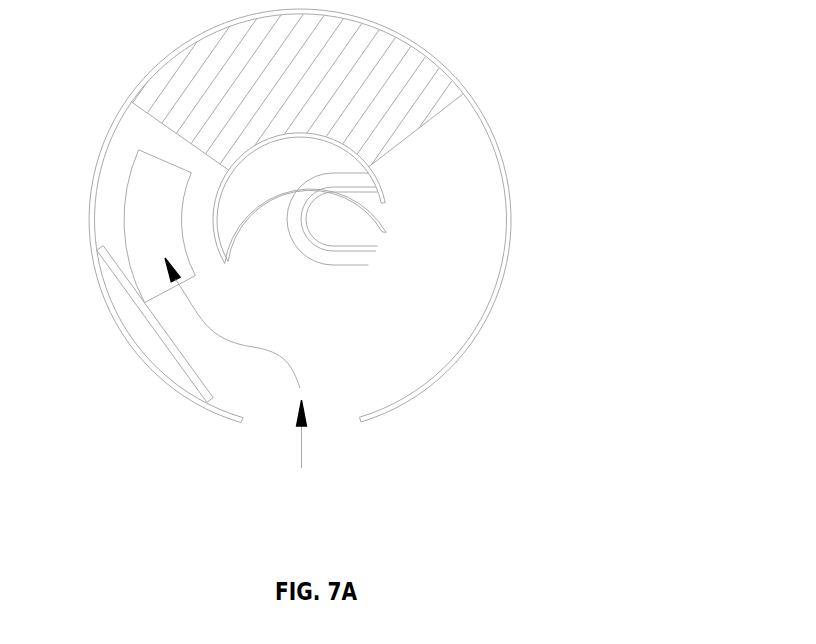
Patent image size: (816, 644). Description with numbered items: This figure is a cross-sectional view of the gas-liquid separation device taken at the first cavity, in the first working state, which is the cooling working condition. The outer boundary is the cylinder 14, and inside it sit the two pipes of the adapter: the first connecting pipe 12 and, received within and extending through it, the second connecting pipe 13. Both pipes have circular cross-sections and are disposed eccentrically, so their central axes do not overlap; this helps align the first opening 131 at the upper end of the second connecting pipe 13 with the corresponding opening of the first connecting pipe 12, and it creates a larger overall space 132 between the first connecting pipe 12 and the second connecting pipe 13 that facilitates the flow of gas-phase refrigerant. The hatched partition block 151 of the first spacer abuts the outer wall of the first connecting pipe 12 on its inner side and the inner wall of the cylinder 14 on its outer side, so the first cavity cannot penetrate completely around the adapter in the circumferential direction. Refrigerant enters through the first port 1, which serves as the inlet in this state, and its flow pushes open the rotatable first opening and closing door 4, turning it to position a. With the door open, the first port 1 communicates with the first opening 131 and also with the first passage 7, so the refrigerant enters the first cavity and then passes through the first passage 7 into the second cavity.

The first port 1 is at (328, 425).
The first opening and closing door 4 is at (180, 363).
The first passage 7 is at (149, 209).
The position a is at (181, 313).
The first connecting pipe 12 is at (350, 290).
The second connecting pipe 13 is at (305, 223).
The first opening 131 is at (383, 213).
The space 132 is at (251, 178).
The cylinder 14 is at (493, 303).
The partition block 151 is at (320, 63).